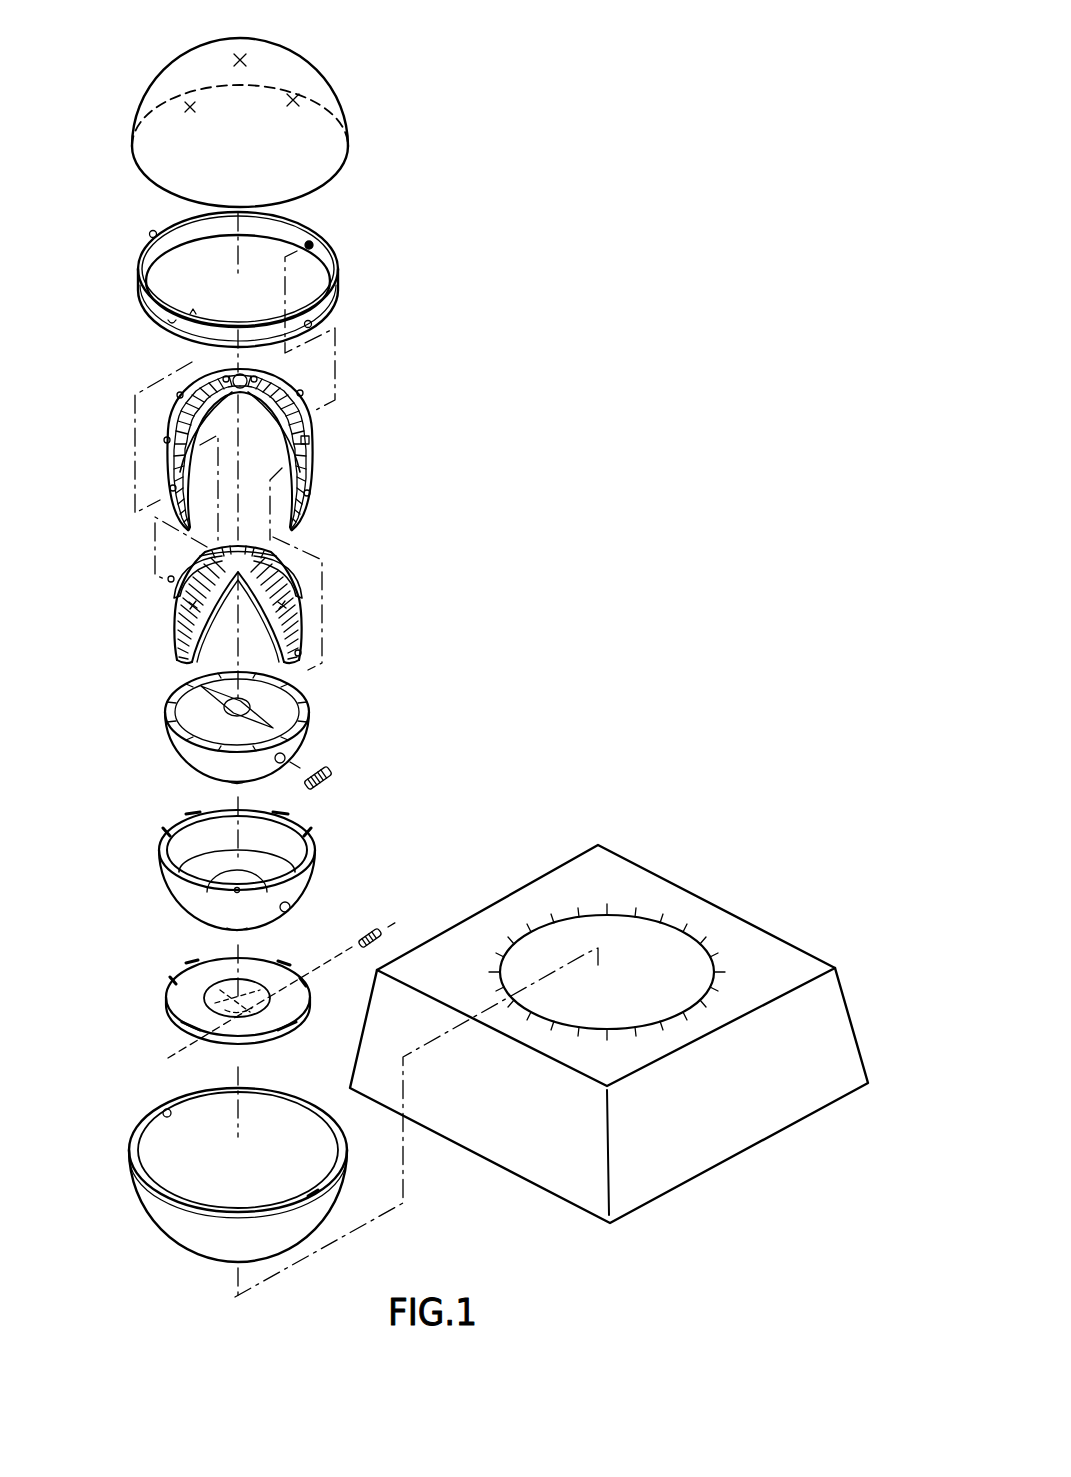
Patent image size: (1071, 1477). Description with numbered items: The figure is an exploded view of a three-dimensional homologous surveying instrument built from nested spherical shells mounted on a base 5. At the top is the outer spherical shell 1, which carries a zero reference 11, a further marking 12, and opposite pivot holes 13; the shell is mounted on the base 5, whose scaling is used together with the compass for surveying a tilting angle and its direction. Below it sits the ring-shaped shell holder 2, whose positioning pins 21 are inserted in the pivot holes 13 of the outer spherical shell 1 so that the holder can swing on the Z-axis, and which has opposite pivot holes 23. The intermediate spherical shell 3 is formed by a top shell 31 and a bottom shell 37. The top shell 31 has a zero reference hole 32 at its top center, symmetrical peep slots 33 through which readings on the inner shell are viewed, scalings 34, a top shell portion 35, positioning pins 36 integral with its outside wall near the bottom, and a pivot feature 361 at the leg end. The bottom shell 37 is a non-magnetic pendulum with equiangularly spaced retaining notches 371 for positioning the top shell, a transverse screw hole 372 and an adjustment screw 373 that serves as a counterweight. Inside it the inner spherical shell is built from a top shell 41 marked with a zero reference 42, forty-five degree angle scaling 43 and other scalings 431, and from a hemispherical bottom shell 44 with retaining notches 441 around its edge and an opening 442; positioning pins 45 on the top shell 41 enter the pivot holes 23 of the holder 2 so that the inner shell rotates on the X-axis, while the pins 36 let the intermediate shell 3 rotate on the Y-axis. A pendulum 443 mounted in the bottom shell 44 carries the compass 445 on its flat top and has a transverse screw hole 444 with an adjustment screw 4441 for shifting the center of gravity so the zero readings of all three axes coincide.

The outer spherical shell 1 is at (347, 130).
The zero reference 11 is at (240, 60).
The marking on housing 12 is at (293, 100).
The pivot holes 13 is at (163, 1111).
The ring-shaped shell holder 2 is at (338, 268).
The positioning pins 21 is at (153, 232).
The pivot holes 23 is at (311, 242).
The intermediate spherical shell 3 is at (318, 466).
The top shell 31 is at (305, 390).
The zero reference hole 32 is at (225, 372).
The peep slots 33 is at (176, 394).
The scalings 34 is at (165, 440).
The top shell 35 is at (312, 440).
The positioning pins 36 is at (170, 488).
The pivot hole of leg 361 is at (310, 493).
The bottom shell 37 is at (173, 1003).
The retaining notches 371 is at (184, 967).
The transverse screw hole 372 is at (213, 1047).
The adjustment screw 373 is at (388, 925).
The top shell 41 is at (294, 603).
The zero reference 42 is at (217, 560).
The 45° angle scaling 43 is at (283, 590).
The other scalings 431 is at (177, 597).
The hemispherical bottom shell 44 is at (313, 856).
The retaining notches 441 is at (297, 823).
The hole of compass bowl 442 is at (290, 913).
The pendulum 443 is at (310, 707).
The transverse screw hole 444 is at (290, 752).
The adjustment screw 4441 is at (332, 770).
The compass 445 is at (207, 700).
The positioning pins 45 is at (300, 654).
The base 5 is at (586, 864).